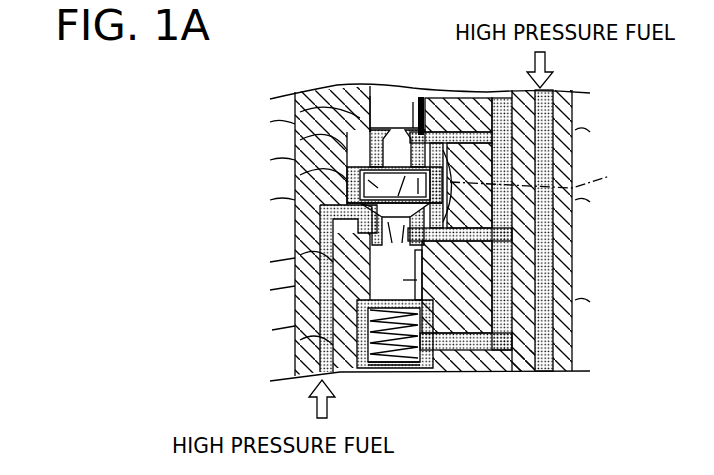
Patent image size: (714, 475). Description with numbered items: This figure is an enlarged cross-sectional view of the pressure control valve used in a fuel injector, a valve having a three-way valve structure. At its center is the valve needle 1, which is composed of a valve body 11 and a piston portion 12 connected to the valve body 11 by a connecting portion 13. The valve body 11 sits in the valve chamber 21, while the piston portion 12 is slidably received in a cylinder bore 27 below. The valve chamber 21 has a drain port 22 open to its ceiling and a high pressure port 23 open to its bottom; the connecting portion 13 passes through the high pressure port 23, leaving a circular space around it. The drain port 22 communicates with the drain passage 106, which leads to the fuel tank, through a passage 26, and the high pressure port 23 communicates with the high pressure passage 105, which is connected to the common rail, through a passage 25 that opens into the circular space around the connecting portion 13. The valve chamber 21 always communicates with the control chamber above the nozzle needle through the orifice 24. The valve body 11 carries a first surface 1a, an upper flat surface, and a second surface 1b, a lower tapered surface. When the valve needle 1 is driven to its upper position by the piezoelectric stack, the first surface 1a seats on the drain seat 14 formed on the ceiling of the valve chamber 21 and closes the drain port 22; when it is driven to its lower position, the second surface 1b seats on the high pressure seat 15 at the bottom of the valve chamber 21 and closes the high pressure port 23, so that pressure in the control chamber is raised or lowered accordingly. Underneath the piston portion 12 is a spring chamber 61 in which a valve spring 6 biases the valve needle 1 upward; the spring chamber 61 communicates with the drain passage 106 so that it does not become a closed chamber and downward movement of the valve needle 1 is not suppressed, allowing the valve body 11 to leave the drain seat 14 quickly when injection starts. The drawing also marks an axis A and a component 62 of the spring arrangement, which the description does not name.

The valve needle 1 is at (300, 319).
The first surface 1a is at (297, 128).
The second surface 1b is at (300, 226).
The valve body 11 is at (300, 157).
The orifice 24 is at (297, 197).
The high pressure port 23 is at (320, 257).
The connecting portion 13 is at (320, 282).
The cylinder bore 27 is at (335, 350).
The drain port 22 is at (560, 100).
The passage 26 is at (540, 131).
The drain seat 14 is at (572, 152).
The axis A is at (540, 171).
The valve chamber 21 is at (573, 220).
The high pressure seat 15 is at (573, 245).
The high pressure passage 105 is at (573, 262).
The passage 25 is at (512, 300).
The piston portion 12 is at (520, 335).
The drain passage 106 is at (560, 371).
The valve spring 6 is at (382, 376).
The spring chamber 61 is at (423, 370).
The spring seat 62 is at (488, 371).